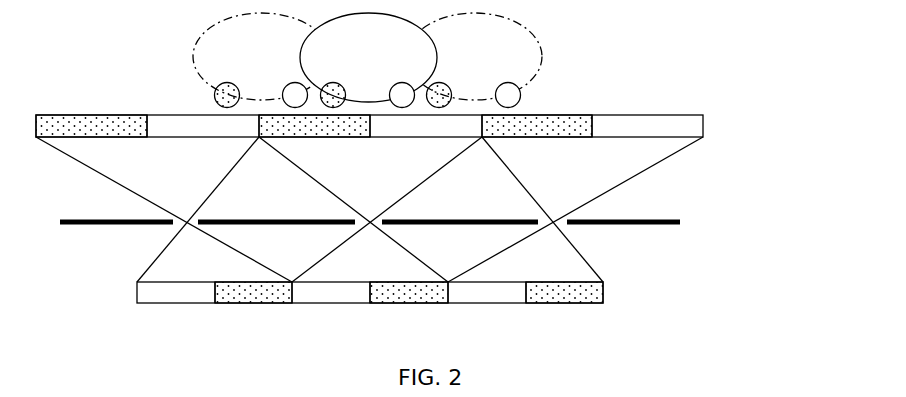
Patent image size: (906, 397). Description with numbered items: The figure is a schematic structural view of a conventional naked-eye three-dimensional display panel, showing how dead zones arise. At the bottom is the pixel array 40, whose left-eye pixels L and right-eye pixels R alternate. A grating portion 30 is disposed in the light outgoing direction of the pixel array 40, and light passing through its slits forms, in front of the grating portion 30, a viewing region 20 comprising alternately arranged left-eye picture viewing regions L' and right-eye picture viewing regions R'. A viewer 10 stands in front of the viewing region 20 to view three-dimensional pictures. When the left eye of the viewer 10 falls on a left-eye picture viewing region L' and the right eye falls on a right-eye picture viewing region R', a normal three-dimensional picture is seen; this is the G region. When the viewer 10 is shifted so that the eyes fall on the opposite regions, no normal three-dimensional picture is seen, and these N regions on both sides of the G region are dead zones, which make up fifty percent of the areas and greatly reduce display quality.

The viewer 10 is at (541, 62).
The viewing region 20 is at (703, 127).
The grating portion 30 is at (680, 222).
The pixel array 40 is at (603, 292).